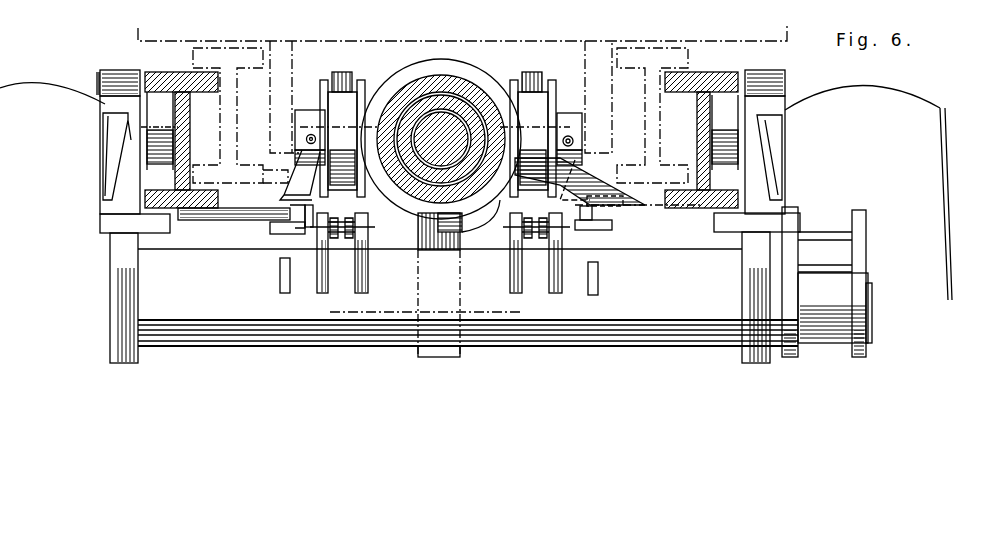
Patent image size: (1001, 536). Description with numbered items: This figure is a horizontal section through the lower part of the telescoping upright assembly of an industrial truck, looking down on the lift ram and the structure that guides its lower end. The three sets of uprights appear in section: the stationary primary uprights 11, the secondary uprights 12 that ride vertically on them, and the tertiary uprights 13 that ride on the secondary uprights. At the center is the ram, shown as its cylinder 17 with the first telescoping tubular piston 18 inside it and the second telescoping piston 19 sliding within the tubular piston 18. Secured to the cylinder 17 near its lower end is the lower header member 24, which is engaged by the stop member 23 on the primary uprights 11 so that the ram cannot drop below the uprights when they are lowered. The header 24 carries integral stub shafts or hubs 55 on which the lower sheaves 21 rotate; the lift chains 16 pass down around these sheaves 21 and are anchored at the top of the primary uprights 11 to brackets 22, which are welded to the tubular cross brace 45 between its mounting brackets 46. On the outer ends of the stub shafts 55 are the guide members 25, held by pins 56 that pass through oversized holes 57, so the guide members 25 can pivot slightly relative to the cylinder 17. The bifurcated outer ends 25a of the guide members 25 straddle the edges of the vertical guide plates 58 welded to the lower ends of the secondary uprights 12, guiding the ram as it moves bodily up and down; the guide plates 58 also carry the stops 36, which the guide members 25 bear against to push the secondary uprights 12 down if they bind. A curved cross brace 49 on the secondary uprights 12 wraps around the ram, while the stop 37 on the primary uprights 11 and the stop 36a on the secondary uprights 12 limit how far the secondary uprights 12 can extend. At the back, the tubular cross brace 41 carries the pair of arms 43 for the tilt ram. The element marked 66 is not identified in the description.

The primary uprights 11 is at (105, 103).
The secondary uprights 12 is at (170, 76).
The tertiary uprights 13 is at (233, 55).
The lift chains 16 is at (343, 72).
The cylinder 17 is at (448, 78).
The first telescoping tubular piston 18 is at (436, 98).
The second telescoping piston 19 is at (428, 125).
The sheaves 21 is at (362, 86).
The brackets 22 is at (323, 256).
The stop member 23 is at (428, 236).
The header member 24 is at (472, 72).
The guide members 25 is at (300, 112).
The outer ends of the guide members 25a is at (270, 226).
The stops 36 is at (272, 195).
The stop 36a is at (98, 70).
The stop 37 is at (123, 76).
The tubular cross brace 41 is at (810, 338).
The arms 43 is at (792, 218).
The tubular cross brace 45 is at (370, 346).
The brackets 46 is at (118, 290).
The cross brace 49 is at (494, 222).
The stub shafts 55 is at (300, 121).
The pins 56 is at (573, 138).
The oversized holes 57 is at (575, 143).
The vertical guide plates 58 is at (236, 216).
The stop 66 is at (282, 278).